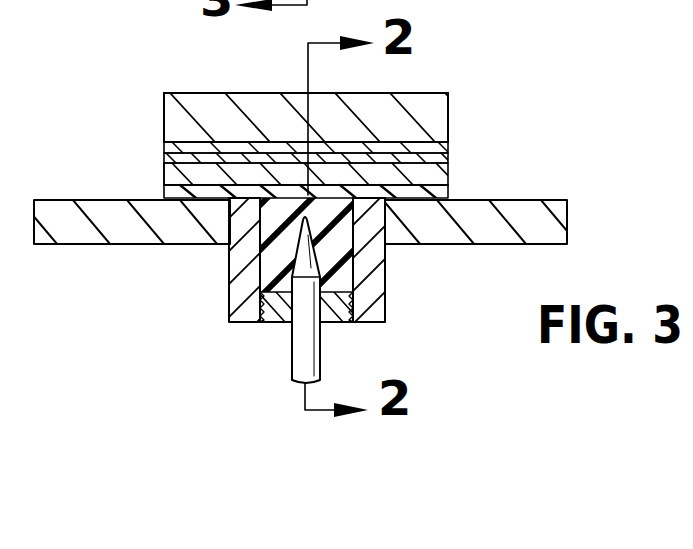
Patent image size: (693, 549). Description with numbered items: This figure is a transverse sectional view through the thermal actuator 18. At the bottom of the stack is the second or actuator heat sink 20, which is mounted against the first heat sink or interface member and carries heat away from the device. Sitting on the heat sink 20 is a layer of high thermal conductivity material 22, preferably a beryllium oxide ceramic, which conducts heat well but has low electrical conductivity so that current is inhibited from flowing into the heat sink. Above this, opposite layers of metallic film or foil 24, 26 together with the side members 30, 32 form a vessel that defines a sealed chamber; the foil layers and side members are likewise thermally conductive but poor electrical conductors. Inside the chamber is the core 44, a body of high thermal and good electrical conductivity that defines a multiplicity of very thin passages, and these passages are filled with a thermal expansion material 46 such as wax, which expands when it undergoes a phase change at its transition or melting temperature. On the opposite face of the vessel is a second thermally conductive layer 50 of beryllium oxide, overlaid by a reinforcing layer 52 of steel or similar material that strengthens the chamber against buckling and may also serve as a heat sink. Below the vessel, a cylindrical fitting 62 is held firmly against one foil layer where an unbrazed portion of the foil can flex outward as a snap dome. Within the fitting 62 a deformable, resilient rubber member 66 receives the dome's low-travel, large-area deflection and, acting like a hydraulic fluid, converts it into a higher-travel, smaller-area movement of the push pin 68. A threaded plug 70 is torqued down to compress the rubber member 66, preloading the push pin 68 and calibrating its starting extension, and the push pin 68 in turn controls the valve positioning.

The actuator 18 is at (514, 130).
The second heat sink 20 is at (545, 228).
The high thermal conductivity layer 22 is at (430, 243).
The metallic foil layer 24 is at (447, 186).
The metallic foil layer 26 is at (440, 158).
The side member 30 is at (433, 177).
The side member 32 is at (170, 168).
The core 44 is at (368, 170).
The thermal expansion material 46 is at (238, 150).
The second thermally conductive layer 50 is at (172, 146).
The reinforcing layer 52 is at (147, 100).
The cylindrical fitting 62 is at (372, 272).
The deformable resilient member 66 is at (268, 253).
The push pin 68 is at (300, 337).
The threaded plug 70 is at (335, 310).